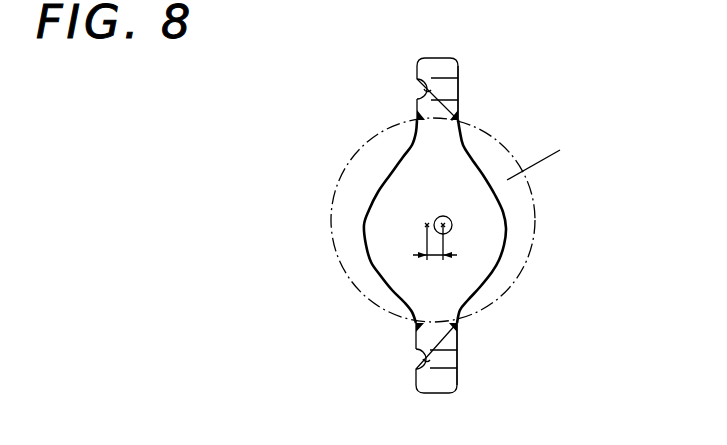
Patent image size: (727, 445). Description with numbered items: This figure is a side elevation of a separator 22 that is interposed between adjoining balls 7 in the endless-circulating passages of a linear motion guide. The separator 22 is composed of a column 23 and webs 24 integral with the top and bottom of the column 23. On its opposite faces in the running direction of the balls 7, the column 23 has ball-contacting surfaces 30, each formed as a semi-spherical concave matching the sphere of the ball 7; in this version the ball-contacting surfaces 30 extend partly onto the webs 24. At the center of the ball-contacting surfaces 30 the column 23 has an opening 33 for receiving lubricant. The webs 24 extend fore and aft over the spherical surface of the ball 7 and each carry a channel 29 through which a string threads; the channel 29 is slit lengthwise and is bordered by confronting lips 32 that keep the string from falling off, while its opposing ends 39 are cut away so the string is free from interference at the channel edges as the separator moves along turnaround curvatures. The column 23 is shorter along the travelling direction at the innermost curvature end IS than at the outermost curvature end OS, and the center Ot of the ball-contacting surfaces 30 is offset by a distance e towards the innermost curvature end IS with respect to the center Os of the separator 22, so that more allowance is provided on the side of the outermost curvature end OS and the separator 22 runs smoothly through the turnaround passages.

The ball 7 is at (542, 153).
The separator 22 is at (490, 123).
The column 23 is at (455, 290).
The web 24 is at (440, 68).
The channel 29 is at (443, 88).
The ball-contacting surface 30 is at (410, 192).
The lip 32 is at (417, 80).
The opening 33 is at (444, 216).
The opposing end 39 is at (458, 72).
The innermost curvature end IS is at (505, 212).
The outermost curvature end OS is at (386, 228).
The center of the separator Os is at (426, 224).
The center of the ball-contacting surfaces Ot is at (452, 225).
The offset distance e is at (437, 258).